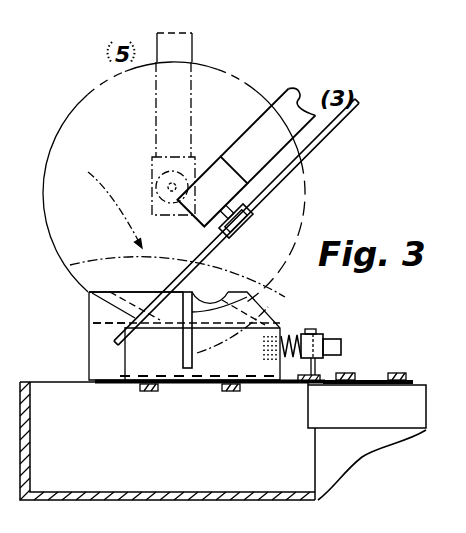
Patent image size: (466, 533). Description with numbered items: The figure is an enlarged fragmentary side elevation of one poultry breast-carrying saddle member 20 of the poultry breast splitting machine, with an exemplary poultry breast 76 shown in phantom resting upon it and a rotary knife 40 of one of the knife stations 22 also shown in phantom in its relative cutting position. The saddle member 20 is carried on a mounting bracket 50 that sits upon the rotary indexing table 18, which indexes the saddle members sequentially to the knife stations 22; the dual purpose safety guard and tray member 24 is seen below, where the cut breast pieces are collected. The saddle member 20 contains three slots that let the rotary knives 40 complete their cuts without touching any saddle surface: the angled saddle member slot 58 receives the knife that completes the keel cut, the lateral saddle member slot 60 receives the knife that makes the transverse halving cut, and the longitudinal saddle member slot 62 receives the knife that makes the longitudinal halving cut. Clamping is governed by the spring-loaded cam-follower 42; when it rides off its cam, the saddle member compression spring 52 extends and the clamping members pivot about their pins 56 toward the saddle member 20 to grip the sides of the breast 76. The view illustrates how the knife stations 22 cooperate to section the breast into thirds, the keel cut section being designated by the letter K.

The knife station 22 is at (229, 50).
The rotary knife 40 is at (244, 79).
The poultry breast 76 is at (102, 203).
The keel cut section K is at (108, 262).
The longitudinal saddle member slot 62 is at (88, 297).
The angled saddle member slot 58 is at (108, 335).
The poultry breast-carrying saddle member 20 is at (88, 352).
The lateral saddle member slot 60 is at (183, 353).
The saddle member compression spring 52 is at (285, 334).
The pin 56 is at (316, 329).
The spring-loaded cam-follower 42 is at (343, 348).
The poultry breast-carrying saddle member mounting bracket 50 is at (378, 377).
The dual purpose safety guard and tray member 24 is at (31, 461).
The rotary indexing table 18 is at (393, 430).